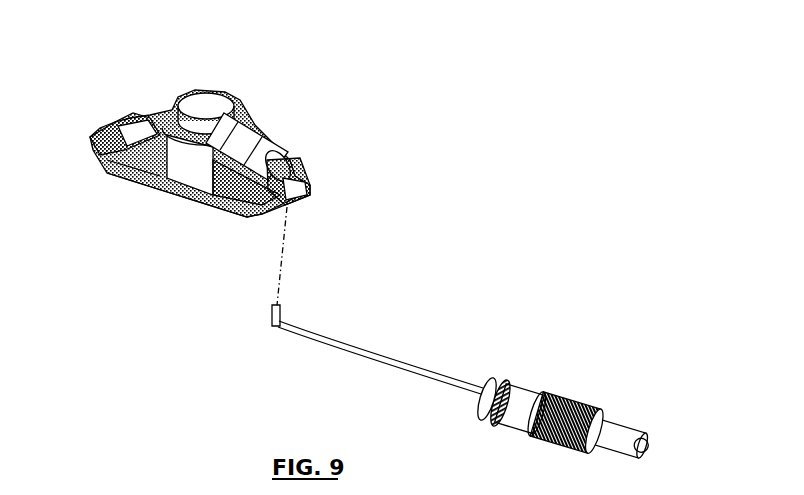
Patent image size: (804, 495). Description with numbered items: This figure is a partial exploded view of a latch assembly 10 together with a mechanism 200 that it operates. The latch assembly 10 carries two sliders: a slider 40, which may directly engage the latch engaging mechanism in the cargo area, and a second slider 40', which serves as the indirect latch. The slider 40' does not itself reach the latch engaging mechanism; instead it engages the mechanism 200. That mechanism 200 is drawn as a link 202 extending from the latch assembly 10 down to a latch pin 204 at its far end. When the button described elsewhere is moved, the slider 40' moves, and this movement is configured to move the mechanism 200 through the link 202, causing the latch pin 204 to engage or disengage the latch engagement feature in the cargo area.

The latch assembly 10 is at (299, 137).
The slider 40 is at (106, 111).
The slider 40' is at (317, 179).
The mechanism 200 is at (328, 363).
The link 202 is at (410, 366).
The latch pin 204 is at (533, 397).